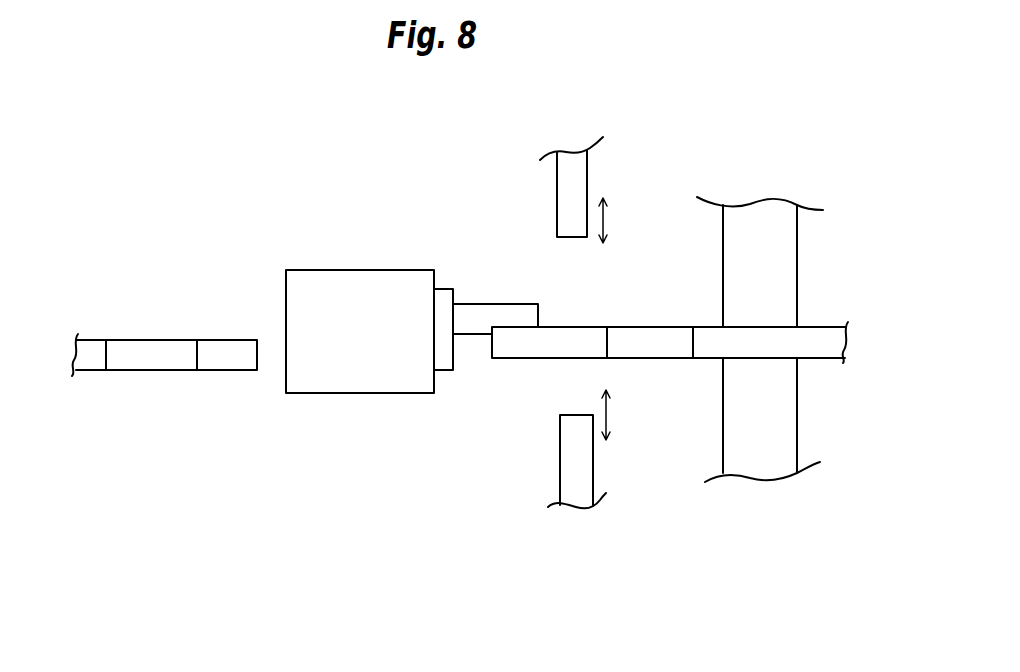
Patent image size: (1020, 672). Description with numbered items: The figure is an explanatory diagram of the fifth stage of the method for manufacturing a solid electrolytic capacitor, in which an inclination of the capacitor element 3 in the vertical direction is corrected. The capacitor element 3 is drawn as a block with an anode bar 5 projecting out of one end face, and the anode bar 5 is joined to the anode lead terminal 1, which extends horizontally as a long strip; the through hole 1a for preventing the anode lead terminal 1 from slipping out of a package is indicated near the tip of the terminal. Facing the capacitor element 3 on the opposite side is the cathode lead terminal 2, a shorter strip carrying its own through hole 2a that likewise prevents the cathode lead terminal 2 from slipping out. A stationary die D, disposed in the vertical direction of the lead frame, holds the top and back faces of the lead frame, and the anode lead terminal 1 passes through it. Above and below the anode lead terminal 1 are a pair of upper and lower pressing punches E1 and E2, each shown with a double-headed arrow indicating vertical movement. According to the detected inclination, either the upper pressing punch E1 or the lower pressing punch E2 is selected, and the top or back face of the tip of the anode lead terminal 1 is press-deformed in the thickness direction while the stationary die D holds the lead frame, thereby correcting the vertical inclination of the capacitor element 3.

The anode lead terminal 1 is at (513, 348).
The through hole 1a is at (643, 338).
The cathode lead terminal 2 is at (88, 356).
The through hole 2a is at (157, 357).
The capacitor element 3 is at (305, 262).
The anode bar 5 is at (481, 312).
The stationary die D is at (783, 395).
The upper pressing punch E1 is at (580, 182).
The lower pressing punch E2 is at (587, 475).